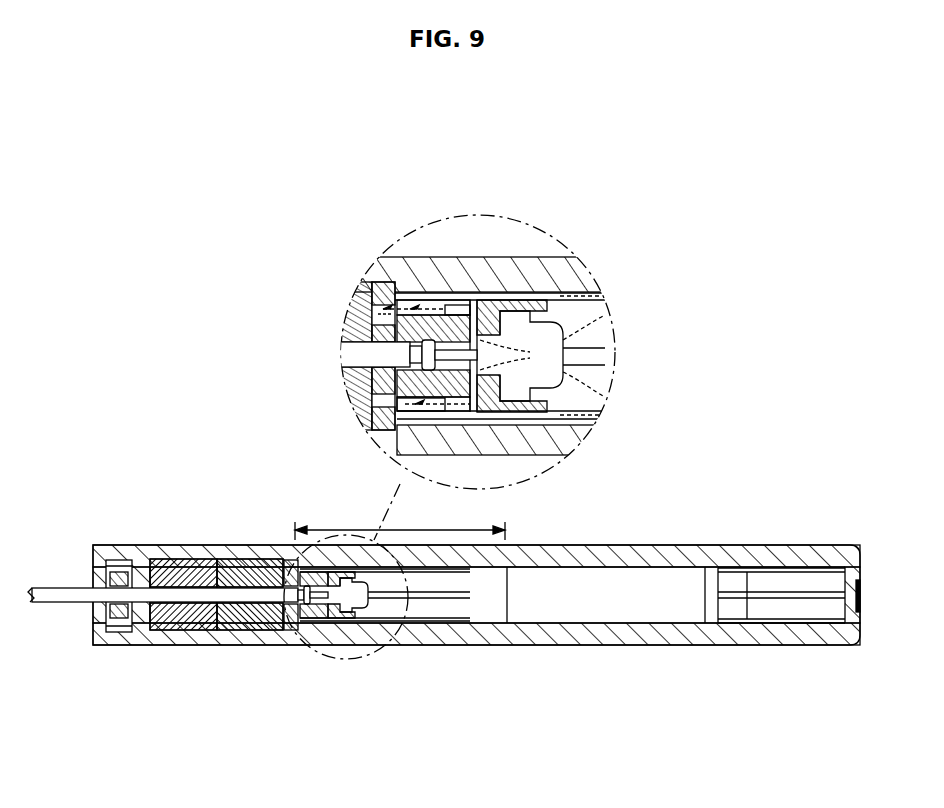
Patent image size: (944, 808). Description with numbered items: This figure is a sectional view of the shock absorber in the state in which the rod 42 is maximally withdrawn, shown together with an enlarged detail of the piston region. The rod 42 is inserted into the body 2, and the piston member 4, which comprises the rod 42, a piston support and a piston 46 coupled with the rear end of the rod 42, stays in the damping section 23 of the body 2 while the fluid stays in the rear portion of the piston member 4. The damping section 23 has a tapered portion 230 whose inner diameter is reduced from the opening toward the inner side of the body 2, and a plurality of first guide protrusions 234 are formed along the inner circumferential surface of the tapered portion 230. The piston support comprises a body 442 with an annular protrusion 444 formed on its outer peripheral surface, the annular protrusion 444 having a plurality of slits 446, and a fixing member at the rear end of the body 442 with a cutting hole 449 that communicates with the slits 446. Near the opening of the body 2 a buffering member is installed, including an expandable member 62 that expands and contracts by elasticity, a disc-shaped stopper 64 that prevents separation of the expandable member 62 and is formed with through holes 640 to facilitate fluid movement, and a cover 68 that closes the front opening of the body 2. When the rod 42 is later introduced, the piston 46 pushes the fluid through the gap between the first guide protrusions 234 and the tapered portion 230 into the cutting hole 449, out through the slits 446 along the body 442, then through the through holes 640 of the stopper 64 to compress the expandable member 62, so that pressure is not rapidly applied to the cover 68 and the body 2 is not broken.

The body 2 is at (548, 646).
The piston member 4 is at (341, 634).
The damping section 23 is at (400, 524).
The rod 42 is at (350, 357).
The piston 46 is at (494, 308).
The expandable member 62 is at (350, 317).
The stopper 64 is at (384, 432).
The cover 68 is at (93, 618).
The tapered portion 230 is at (421, 293).
The first guide protrusions 234 is at (412, 296).
The body 442 is at (398, 430).
The annular protrusion 444 is at (478, 420).
The slits 446 is at (470, 308).
The cutting hole 449 is at (530, 352).
The through holes 640 is at (352, 390).